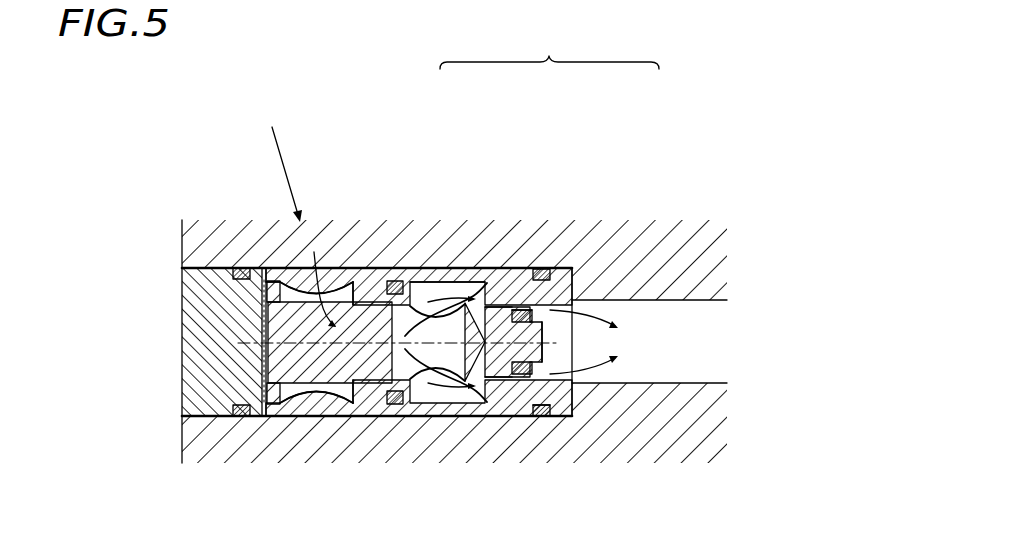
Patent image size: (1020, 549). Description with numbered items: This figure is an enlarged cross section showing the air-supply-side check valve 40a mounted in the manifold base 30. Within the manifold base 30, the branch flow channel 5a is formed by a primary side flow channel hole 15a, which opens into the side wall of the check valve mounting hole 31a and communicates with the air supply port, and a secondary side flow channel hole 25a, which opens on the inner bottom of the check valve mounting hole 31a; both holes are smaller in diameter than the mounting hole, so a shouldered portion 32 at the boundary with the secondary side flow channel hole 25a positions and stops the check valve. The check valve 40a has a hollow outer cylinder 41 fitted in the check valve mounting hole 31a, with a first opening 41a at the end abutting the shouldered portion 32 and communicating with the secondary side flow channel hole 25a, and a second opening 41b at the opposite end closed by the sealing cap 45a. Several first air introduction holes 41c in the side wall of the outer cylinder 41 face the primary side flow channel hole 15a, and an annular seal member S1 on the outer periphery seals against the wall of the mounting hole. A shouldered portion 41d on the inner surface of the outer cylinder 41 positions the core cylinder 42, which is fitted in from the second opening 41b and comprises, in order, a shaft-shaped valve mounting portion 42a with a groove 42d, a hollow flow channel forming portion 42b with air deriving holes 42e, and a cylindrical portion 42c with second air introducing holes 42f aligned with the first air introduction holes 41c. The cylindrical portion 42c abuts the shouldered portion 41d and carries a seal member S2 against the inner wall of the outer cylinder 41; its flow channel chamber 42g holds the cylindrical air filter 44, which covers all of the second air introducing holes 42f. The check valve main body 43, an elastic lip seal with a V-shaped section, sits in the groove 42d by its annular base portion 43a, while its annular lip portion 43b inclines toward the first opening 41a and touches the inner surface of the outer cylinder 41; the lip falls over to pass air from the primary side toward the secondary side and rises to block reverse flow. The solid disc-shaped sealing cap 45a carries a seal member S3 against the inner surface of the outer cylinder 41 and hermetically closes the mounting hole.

The branch flow channel 5a is at (549, 46).
The primary side flow channel hole 15a is at (347, 268).
The secondary side flow channel hole 25a is at (654, 300).
The manifold base 30 is at (688, 433).
The check valve mounting hole 31a is at (180, 397).
The shouldered portion 32 is at (570, 410).
The air-supply-side check valve 40a is at (276, 155).
The outer cylinder 41 is at (417, 333).
The first opening 41a is at (578, 334).
The second opening 41b is at (270, 288).
The first air introduction holes 41c is at (331, 360).
The shouldered portion 41d is at (405, 296).
The core cylinder 42 is at (434, 407).
The valve mounting portion 42a is at (488, 306).
The flow channel forming portion 42b is at (500, 380).
The cylindrical portion 42c is at (368, 280).
The groove 42d is at (541, 410).
The air deriving holes 42e is at (438, 304).
The second air introducing holes 42f is at (280, 268).
The flow channel chamber 42g is at (370, 407).
The check valve main body 43 is at (516, 376).
The base portion 43a is at (556, 306).
The lip portion 43b is at (518, 308).
The air filter 44 is at (292, 408).
The sealing cap 45a is at (232, 410).
The seal member S1 is at (546, 416).
The seal member S2 is at (388, 404).
The seal member S3 is at (244, 408).